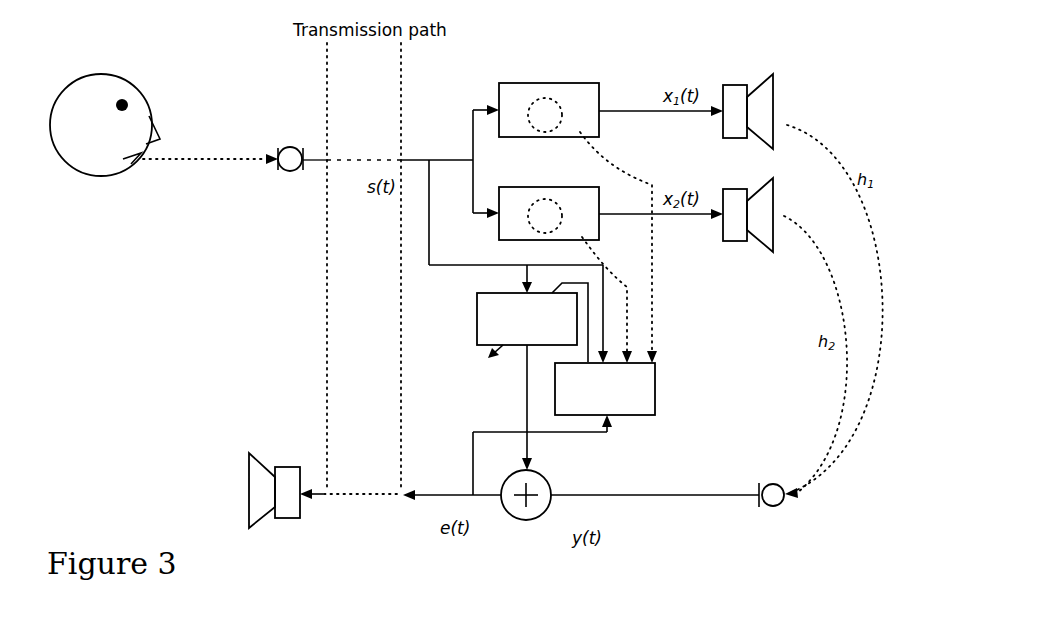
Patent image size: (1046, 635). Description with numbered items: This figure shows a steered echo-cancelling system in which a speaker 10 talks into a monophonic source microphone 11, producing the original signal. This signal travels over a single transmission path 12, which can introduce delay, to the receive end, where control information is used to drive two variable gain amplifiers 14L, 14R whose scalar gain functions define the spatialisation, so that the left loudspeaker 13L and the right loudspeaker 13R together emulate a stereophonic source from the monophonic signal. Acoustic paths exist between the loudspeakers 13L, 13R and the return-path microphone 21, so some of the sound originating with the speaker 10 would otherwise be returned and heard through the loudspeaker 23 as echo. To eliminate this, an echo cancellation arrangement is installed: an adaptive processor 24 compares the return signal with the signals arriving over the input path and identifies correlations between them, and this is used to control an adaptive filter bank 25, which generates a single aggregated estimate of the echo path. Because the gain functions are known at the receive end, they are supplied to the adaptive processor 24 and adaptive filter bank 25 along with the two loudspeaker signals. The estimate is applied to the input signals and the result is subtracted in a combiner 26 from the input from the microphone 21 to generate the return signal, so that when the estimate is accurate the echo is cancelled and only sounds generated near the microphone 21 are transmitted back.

The speaker 10 is at (108, 125).
The microphone 11 is at (302, 143).
The transmission path 12 is at (364, 143).
The left loudspeaker 13L is at (748, 103).
The right loudspeaker 13R is at (748, 226).
The variable gain amplifier 14L is at (549, 97).
The variable gain amplifier 14R is at (549, 203).
The microphone 21 is at (771, 514).
The loudspeaker 23 is at (274, 481).
The adaptive processor 24 is at (518, 322).
The adaptive filter bank 25 is at (621, 389).
The combiner 26 is at (535, 450).